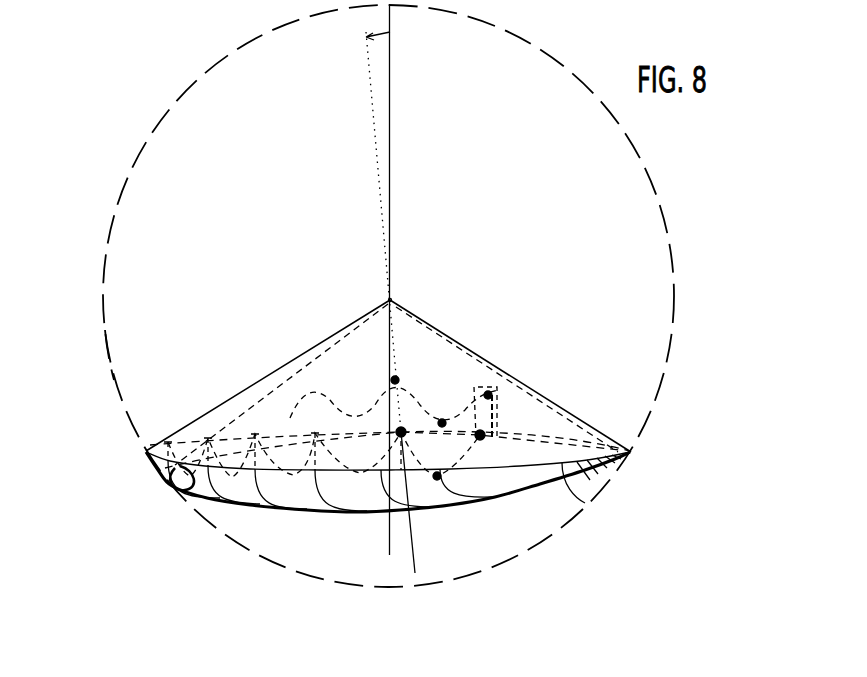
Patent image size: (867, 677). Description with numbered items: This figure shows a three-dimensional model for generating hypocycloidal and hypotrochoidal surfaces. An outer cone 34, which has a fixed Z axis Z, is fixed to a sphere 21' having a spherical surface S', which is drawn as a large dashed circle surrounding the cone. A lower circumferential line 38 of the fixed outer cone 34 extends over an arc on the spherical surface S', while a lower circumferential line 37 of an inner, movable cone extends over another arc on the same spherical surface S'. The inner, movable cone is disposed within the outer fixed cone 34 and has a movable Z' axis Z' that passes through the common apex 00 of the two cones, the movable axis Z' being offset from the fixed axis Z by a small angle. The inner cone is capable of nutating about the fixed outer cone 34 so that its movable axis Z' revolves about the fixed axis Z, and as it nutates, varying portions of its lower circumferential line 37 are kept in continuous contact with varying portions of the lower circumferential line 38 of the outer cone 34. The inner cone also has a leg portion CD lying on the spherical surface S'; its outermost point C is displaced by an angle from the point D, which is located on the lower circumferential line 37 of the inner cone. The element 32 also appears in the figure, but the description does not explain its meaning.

The spherical surface S′ is at (676, 268).
The sphere 21′ is at (110, 362).
The fixed Z axis Z is at (396, 112).
The movable Z' axis Z′ is at (372, 88).
The common apex 00 is at (392, 300).
The outer cone 34 is at (244, 384).
The lower circumferential line 38 is at (584, 509).
The section plane 32 is at (490, 478).
The lower circumferential line 37 is at (473, 506).
The outermost point C is at (492, 394).
The point D is at (484, 434).